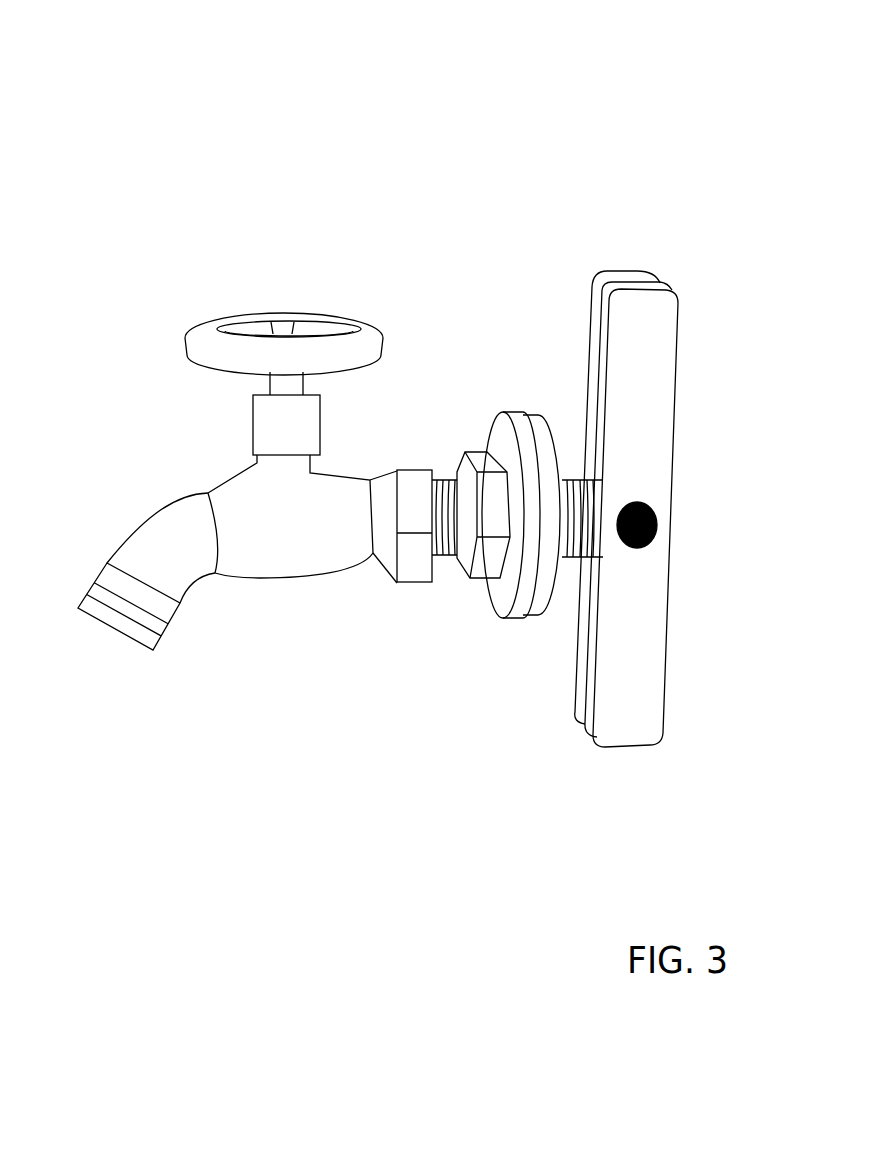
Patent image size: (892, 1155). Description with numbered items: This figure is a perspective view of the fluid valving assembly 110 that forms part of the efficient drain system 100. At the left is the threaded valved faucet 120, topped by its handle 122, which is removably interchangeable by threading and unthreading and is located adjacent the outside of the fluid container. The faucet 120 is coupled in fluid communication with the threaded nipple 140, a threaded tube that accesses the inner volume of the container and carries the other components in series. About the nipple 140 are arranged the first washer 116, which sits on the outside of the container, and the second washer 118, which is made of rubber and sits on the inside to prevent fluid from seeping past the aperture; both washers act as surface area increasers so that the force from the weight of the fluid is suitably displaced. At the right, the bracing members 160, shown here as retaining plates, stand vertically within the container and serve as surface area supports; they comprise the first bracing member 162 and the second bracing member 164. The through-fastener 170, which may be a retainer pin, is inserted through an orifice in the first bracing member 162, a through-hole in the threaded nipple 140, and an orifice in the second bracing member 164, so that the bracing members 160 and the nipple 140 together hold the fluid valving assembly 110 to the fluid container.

The efficient drain system 100 is at (583, 82).
The fluid valving assembly 110 is at (599, 130).
The first washer 116 is at (500, 409).
The second washer 118 is at (535, 407).
The threaded valved faucet 120 is at (323, 533).
The handle 122 is at (211, 313).
The threaded nipple 140 is at (448, 540).
The bracing members 160 is at (645, 679).
The first bracing member 162 is at (654, 308).
The second bracing member 164 is at (627, 258).
The through-fastener 170 is at (642, 498).